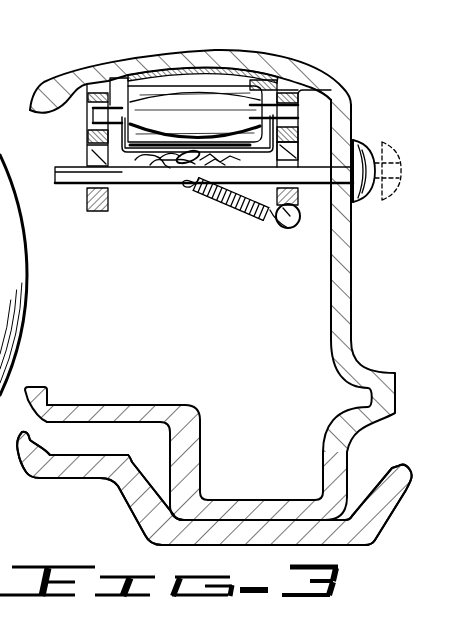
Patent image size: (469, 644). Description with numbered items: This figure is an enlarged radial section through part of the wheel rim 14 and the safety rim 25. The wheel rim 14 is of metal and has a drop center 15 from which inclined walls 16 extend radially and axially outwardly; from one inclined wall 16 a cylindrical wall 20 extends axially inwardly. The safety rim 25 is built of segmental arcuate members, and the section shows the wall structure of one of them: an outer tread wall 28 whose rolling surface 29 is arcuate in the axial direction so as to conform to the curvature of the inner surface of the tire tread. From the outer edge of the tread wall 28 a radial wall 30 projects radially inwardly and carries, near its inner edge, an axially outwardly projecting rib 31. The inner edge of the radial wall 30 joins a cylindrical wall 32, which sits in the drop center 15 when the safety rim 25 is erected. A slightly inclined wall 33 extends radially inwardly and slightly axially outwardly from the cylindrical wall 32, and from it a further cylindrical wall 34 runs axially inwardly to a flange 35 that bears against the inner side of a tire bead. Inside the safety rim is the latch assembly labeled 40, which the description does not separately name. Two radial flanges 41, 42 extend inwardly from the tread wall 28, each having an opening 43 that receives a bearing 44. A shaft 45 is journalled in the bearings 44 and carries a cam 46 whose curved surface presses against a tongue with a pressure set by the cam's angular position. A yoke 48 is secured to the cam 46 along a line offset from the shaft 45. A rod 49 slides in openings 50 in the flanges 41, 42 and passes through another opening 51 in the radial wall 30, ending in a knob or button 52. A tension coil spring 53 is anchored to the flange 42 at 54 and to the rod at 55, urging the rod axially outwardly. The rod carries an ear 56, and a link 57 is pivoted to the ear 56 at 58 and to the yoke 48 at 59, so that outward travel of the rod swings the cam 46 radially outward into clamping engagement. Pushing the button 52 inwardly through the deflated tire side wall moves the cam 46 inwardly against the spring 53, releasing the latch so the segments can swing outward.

The wheel rim 14 is at (215, 498).
The drop center 15 is at (255, 546).
The inclined walls 16 is at (132, 511).
The cylindrical wall 20 is at (100, 479).
The safety rim 25 is at (212, 269).
The outer tread wall 28 is at (255, 56).
The rolling surface 29 is at (208, 72).
The radial wall 30 is at (351, 282).
The rib 31 is at (385, 372).
The cylindrical wall 32 is at (270, 500).
The inclined wall 33 is at (200, 443).
The cylindrical wall 34 is at (102, 405).
The flange 35 is at (42, 388).
The latch mechanism 40 is at (227, 161).
The radial flange 41 is at (88, 125).
The radial flange 42 is at (298, 143).
The opening 43 is at (88, 134).
The bearing 44 is at (298, 100).
The shaft 45 is at (268, 104).
The cam 46 is at (157, 86).
The yoke 48 is at (133, 162).
The rod 49 is at (300, 168).
The openings 50 is at (88, 198).
The opening 51 is at (346, 192).
The knob or button 52 is at (361, 140).
The tension coil spring 53 is at (262, 219).
The spring anchor point 54 is at (286, 228).
The spring connection 55 is at (188, 183).
The ear 56 is at (148, 158).
The link 57 is at (173, 162).
The pivot connection 58 is at (166, 168).
The pivot connection 59 is at (175, 175).